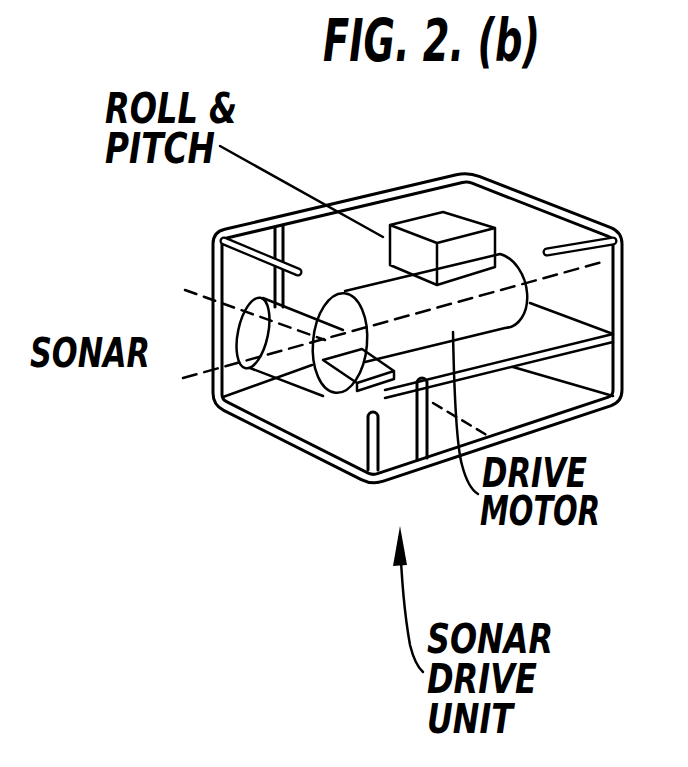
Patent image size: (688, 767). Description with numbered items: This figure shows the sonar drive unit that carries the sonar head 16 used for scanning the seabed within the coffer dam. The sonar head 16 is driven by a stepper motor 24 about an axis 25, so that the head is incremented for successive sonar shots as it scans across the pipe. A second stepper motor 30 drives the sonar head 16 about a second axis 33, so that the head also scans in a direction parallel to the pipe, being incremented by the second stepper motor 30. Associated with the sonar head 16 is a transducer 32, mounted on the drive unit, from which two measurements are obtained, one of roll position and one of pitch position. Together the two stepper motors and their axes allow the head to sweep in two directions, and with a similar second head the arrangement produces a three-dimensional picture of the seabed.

The sonar head 16 is at (352, 387).
The stepper motor 24 is at (252, 370).
The axis 25 is at (201, 310).
The second stepper motor 30 is at (508, 268).
The transducer 32 is at (450, 217).
The axis 33 is at (567, 281).